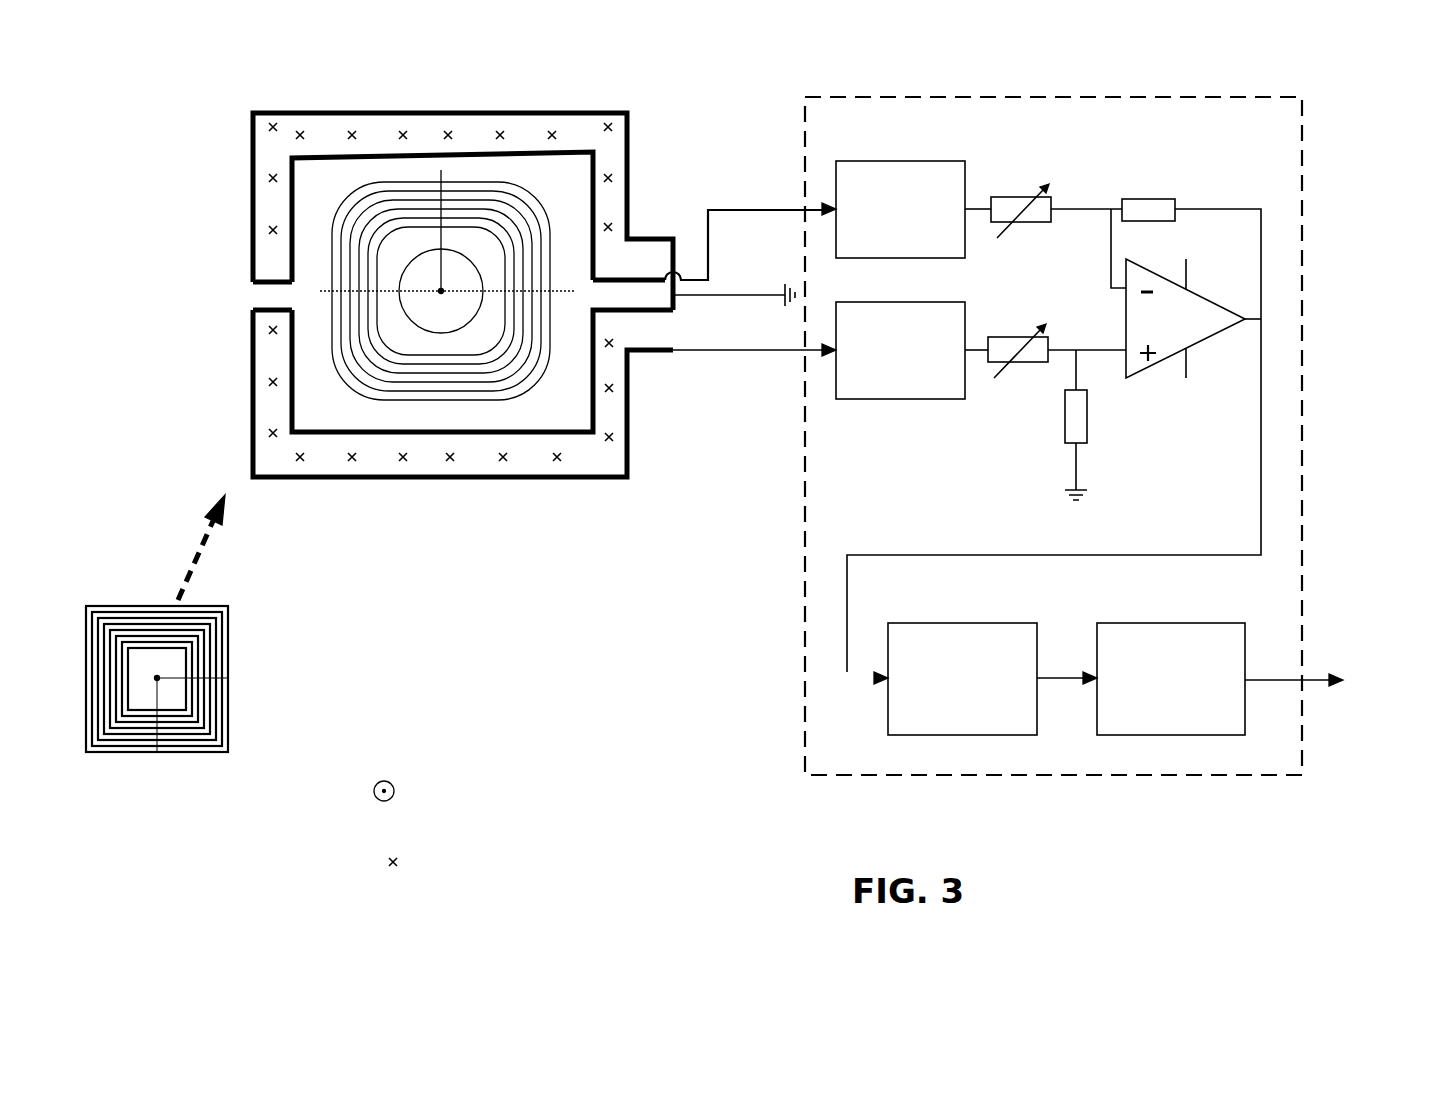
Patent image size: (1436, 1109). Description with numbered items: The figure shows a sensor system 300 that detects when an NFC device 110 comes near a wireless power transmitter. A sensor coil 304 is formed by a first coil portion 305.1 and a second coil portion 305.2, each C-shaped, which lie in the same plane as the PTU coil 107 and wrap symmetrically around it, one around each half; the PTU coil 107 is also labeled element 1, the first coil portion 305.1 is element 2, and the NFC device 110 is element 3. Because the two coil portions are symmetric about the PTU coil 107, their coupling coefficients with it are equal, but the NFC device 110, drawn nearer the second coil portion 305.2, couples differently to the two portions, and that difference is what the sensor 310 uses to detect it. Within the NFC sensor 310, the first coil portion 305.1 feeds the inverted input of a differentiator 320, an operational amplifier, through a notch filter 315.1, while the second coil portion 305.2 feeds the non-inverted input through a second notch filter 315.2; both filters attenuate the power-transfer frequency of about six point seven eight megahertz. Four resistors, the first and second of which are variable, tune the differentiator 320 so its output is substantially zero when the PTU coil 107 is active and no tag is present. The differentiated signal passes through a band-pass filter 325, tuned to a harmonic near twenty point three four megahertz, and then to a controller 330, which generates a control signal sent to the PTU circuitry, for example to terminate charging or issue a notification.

The sensor system 300 is at (1362, 94).
The sensor coil 304 is at (215, 120).
The first coil portion 305.1 is at (262, 242).
The second coil portion 305.2 is at (462, 479).
The PTU coil 107 is at (446, 293).
The NFC device 110 is at (217, 698).
The sensor 310 is at (1074, 436).
The filter 315.1 is at (900, 209).
The filter 315.2 is at (900, 350).
The differentiator 320 is at (1205, 338).
The filter 325 is at (955, 679).
The controller 330 is at (1171, 679).
The PTU coil 1 is at (441, 291).
The first coil portion 2 is at (233, 199).
The NFC device 3 is at (139, 688).